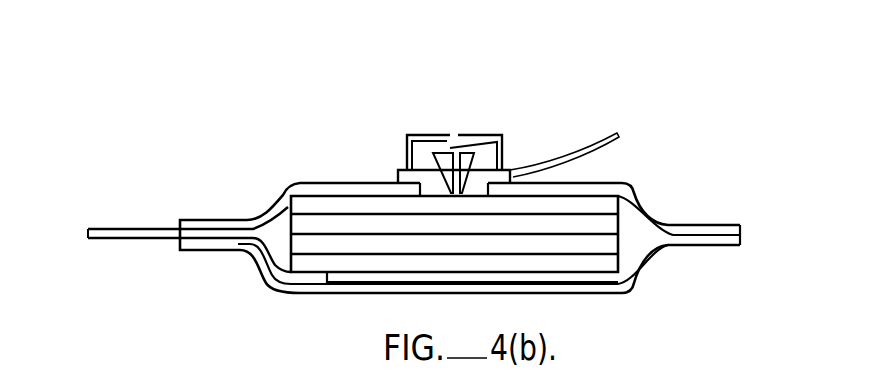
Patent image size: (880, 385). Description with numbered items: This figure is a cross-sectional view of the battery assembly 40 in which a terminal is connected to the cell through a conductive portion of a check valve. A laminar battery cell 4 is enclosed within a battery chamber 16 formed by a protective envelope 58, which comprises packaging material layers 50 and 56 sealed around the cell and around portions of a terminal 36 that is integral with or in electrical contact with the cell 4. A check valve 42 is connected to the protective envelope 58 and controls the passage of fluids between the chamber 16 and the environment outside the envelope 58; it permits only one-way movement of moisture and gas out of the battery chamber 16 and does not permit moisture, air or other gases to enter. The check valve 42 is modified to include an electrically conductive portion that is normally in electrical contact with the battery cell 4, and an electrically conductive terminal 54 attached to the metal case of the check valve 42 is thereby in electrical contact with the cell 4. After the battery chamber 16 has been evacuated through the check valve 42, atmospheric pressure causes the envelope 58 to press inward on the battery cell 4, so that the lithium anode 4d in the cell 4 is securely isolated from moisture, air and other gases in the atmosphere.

The battery assembly 40 is at (287, 90).
The battery chamber 16 is at (279, 222).
The protective envelope 58 is at (365, 181).
The check valve 42 is at (467, 133).
The terminal 54 is at (577, 147).
The packaging material layer 50 is at (226, 218).
The laminar battery cell 4 is at (627, 231).
The terminal 36 is at (272, 248).
The packaging material layer 56 is at (289, 291).
The lithium anode 4d is at (587, 265).